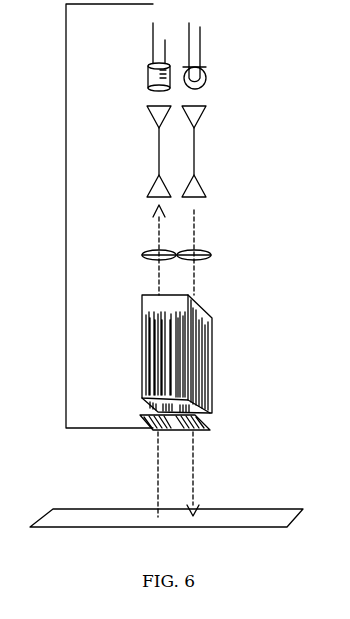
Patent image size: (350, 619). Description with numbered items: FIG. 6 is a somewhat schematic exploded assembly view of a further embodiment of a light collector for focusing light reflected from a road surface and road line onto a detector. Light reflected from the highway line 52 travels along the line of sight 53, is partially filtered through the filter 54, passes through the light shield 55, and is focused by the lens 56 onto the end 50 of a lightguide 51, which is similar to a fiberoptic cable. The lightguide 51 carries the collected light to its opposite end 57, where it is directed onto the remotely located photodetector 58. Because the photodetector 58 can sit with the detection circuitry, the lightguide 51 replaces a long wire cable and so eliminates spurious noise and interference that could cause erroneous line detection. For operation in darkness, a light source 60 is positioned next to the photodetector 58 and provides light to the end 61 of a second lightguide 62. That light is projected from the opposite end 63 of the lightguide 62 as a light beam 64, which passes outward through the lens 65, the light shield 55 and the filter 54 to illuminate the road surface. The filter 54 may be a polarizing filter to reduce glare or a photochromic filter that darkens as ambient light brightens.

The end of lightguide 50 is at (160, 188).
The lightguide 51 is at (159, 146).
The highway line 52 is at (275, 516).
The line of sight 53 is at (158, 497).
The filter 54 is at (210, 430).
The light shield 55 is at (198, 300).
The lens 56 is at (148, 250).
The opposite end of lightguide 57 is at (156, 117).
The photodetector 58 is at (150, 71).
The light source 60 is at (206, 80).
The end of lightguide 61 is at (197, 120).
The lightguide 62 is at (196, 146).
The opposite end of lightguide 63 is at (200, 190).
The light beam 64 is at (193, 455).
The lens 65 is at (208, 252).